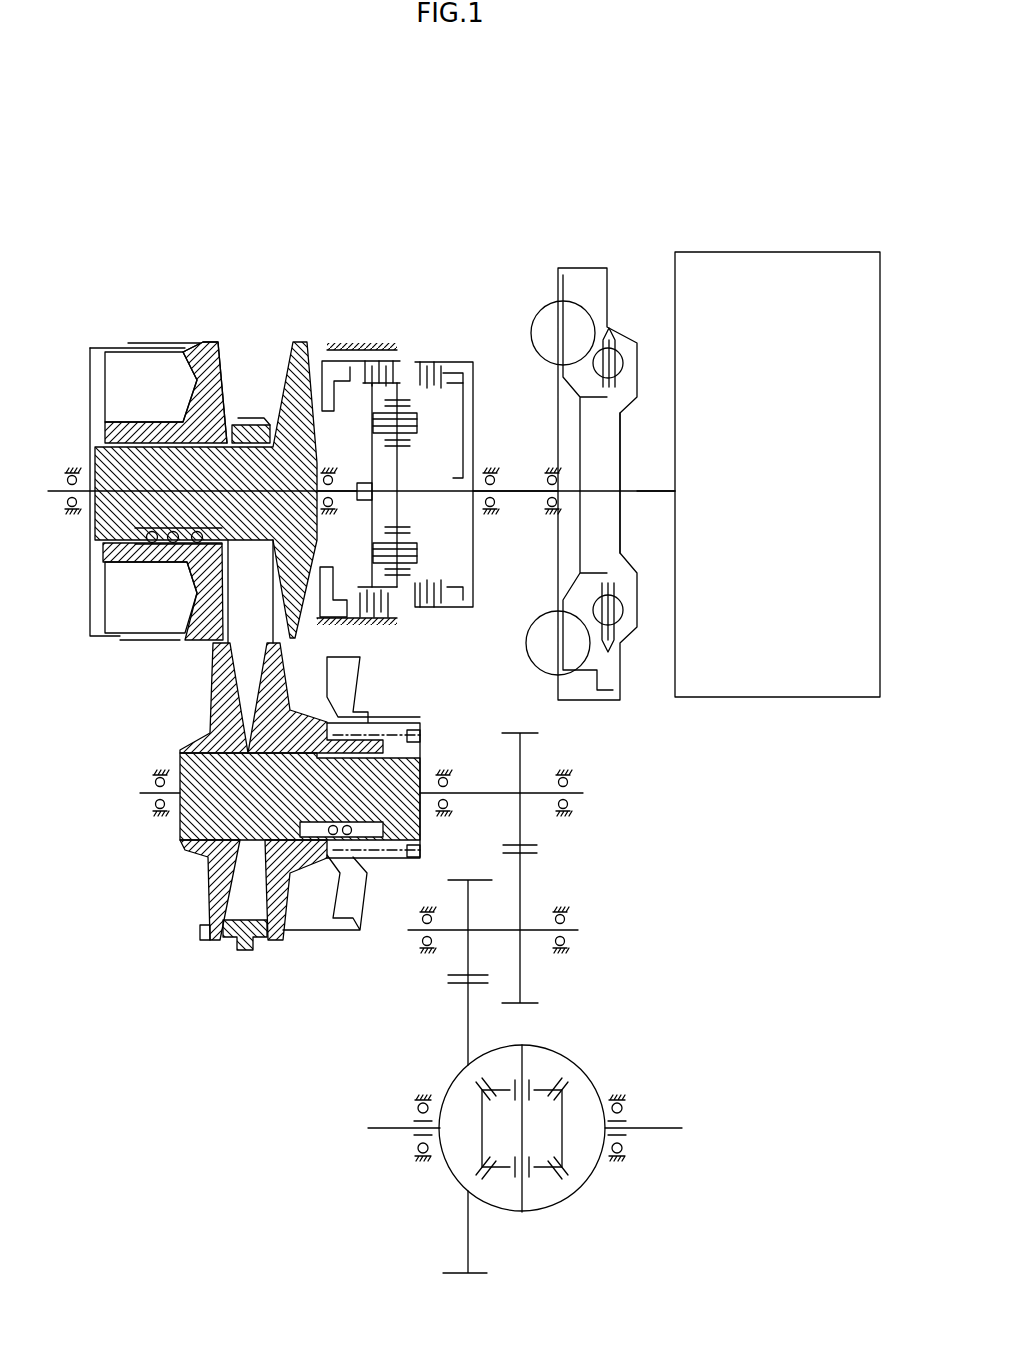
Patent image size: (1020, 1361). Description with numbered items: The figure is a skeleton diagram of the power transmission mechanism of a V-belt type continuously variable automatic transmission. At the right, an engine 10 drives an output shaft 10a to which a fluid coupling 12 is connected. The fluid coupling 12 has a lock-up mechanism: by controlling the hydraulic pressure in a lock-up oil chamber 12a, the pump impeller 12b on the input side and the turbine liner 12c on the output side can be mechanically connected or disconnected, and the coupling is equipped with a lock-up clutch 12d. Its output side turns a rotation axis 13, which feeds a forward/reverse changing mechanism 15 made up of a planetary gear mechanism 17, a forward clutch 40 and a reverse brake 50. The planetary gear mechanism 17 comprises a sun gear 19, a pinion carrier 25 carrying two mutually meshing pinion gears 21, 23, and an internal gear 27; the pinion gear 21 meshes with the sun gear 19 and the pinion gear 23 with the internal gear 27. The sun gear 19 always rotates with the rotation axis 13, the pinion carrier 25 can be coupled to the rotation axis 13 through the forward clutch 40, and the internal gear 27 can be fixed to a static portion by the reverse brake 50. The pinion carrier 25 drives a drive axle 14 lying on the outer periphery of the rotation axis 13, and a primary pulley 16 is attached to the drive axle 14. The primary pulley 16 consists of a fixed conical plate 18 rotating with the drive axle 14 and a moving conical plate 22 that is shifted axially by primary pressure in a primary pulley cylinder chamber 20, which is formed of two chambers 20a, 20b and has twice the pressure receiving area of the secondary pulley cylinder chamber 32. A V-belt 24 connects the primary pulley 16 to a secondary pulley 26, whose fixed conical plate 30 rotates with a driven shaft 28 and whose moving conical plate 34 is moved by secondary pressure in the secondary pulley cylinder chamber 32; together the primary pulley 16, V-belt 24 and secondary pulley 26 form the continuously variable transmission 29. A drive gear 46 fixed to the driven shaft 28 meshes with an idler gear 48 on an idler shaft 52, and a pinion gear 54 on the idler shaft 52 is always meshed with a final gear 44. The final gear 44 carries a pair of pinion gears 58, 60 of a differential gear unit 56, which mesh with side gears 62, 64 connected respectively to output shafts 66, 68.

The engine 10 is at (718, 252).
The output shaft 10a is at (660, 491).
The fluid coupling 12 is at (585, 262).
The lock-up oil chamber 12a is at (612, 553).
The pump impeller 12b is at (547, 655).
The turbine liner 12c is at (563, 633).
The lock-up clutch 12d is at (612, 300).
The rotation axis 13 is at (510, 487).
The drive axle 14 is at (342, 480).
The forward/reverse changing mechanism 15 is at (377, 327).
The primary pulley 16 is at (282, 327).
The planetary gear mechanism 17 is at (435, 416).
The fixed conical plate 18 is at (303, 340).
The sun gear 19 is at (400, 503).
The primary pulley cylinder chamber 20 is at (128, 367).
The chamber 20a is at (90, 636).
The chamber 20b is at (162, 343).
The pinion gear 21 is at (413, 538).
The moving conical plate 22 is at (205, 340).
The pinion gear 23 is at (410, 570).
The V-belt 24 is at (220, 633).
The pinion carrier 25 is at (370, 517).
The secondary pulley 26 is at (238, 965).
The internal gear 27 is at (400, 587).
The driven shaft 28 is at (497, 795).
The V-belt type continuously variable automatic transmission 29 is at (200, 725).
The fixed conical plate 30 is at (213, 873).
The secondary pulley cylinder chamber 32 is at (317, 925).
The moving conical plate 34 is at (270, 940).
The forward clutch 40 is at (453, 347).
The final gear 44 is at (477, 1273).
The drive gear 46 is at (515, 732).
The idler gear 48 is at (530, 1003).
The reverse brake 50 is at (407, 362).
The idler shaft 52 is at (525, 927).
The pinion gear 54 is at (467, 957).
The differential gear unit 56 is at (587, 1057).
The pinion gear 58 is at (540, 1167).
The pinion gear 60 is at (503, 1090).
The side gear 62 is at (477, 1165).
The side gear 64 is at (570, 1100).
The output shaft 66 is at (383, 1133).
The output shaft 68 is at (652, 1133).